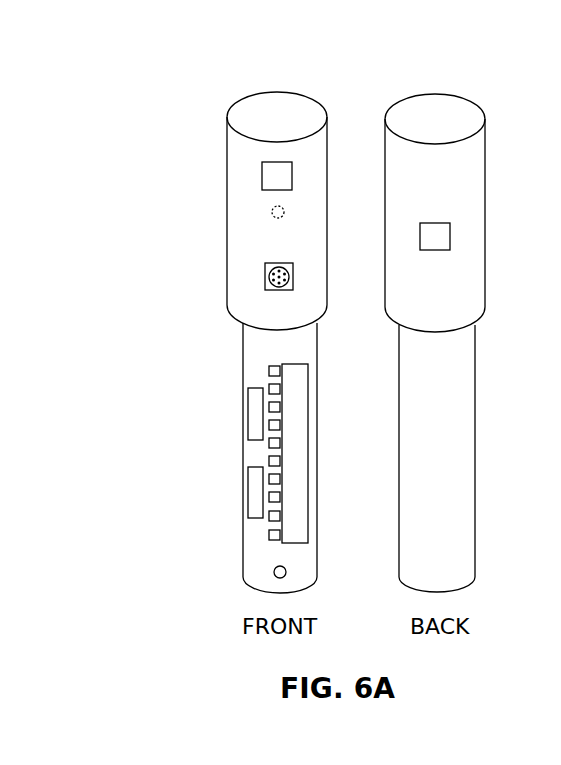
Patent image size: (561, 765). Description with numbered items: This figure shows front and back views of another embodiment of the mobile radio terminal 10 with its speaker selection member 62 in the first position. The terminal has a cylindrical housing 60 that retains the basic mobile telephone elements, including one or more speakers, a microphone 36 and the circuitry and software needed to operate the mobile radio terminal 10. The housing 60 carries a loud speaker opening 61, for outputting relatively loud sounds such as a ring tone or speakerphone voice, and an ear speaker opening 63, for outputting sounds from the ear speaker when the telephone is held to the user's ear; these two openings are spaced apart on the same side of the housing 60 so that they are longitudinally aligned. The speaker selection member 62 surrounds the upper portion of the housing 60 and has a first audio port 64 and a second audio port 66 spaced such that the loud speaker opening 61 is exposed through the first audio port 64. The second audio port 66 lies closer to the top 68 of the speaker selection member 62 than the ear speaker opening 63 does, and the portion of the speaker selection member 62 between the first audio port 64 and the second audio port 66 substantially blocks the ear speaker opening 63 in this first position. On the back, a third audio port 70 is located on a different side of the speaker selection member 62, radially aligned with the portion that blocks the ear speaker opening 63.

The mobile radio terminal 10 is at (219, 74).
The microphone 36 is at (274, 568).
The housing 60 is at (415, 555).
The loud speaker opening 61 is at (265, 265).
The speaker selection member 62 is at (413, 163).
The ear speaker opening 63 is at (272, 208).
The first audio port 64 is at (265, 280).
The second audio port 66 is at (262, 175).
The top 68 is at (420, 105).
The third audio port 70 is at (450, 233).